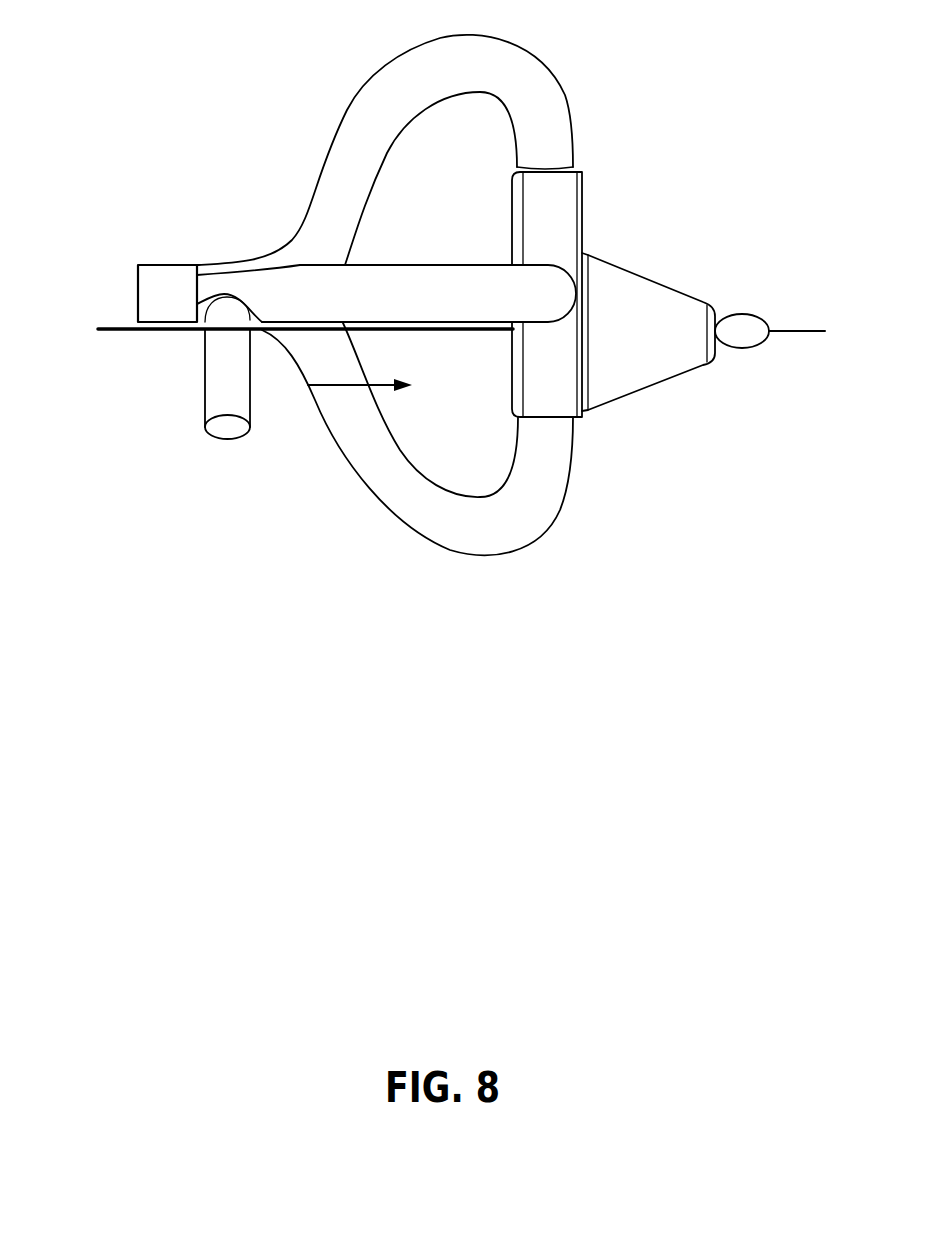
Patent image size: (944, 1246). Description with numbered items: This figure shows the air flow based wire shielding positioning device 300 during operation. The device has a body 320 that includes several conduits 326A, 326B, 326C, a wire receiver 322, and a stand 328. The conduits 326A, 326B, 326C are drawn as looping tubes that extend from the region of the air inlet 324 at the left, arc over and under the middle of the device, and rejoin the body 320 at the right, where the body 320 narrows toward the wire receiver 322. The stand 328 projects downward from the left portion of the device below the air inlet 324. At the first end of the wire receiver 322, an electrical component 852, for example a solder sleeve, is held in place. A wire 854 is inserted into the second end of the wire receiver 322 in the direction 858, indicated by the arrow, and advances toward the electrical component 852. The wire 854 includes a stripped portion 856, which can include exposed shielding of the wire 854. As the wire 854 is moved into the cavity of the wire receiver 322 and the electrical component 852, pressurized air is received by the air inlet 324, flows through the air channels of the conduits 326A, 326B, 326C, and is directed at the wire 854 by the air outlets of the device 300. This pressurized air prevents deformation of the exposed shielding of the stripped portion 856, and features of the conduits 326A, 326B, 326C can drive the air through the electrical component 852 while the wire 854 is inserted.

The wire shielding positioning device 300 is at (146, 53).
The body 320 is at (582, 190).
The wire receiver 322 is at (815, 310).
The air inlet 324 is at (138, 295).
The conduit 326A is at (373, 100).
The conduit 326B is at (422, 285).
The conduit 326C is at (502, 535).
The stand 328 is at (227, 428).
The electrical component 852 is at (742, 348).
The wire 854 is at (808, 333).
The stripped portion 856 is at (483, 333).
The direction 858 is at (352, 387).